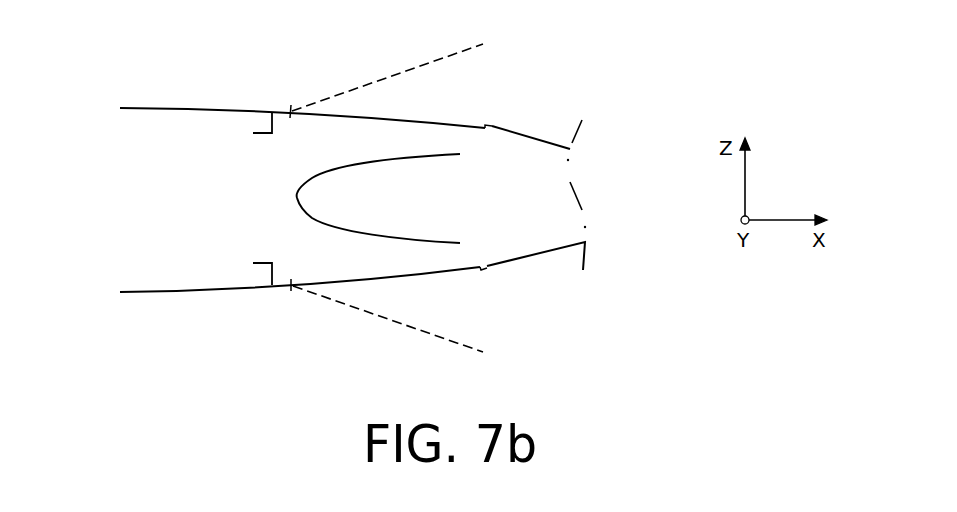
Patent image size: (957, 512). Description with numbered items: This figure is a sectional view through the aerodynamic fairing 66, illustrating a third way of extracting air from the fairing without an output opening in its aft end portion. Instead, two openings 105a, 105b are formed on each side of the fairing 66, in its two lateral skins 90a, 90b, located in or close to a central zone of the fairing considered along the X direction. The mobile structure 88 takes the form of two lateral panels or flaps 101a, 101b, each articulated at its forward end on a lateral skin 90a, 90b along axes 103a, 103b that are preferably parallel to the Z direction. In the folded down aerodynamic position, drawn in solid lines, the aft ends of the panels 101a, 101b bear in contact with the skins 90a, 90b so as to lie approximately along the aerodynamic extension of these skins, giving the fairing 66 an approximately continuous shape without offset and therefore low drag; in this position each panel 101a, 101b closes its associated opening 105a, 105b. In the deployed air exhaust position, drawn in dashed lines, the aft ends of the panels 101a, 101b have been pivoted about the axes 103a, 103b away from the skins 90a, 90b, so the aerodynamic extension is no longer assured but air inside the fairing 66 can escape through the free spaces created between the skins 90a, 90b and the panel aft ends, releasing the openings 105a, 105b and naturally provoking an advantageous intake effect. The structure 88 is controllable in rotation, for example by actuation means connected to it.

The aerodynamic fairing 66 is at (571, 182).
The mobile structure 88 is at (328, 67).
The lateral skin 90a is at (528, 138).
The lateral skin 90b is at (568, 247).
The lateral panel 101a is at (405, 118).
The lateral panel 101b is at (450, 272).
The axis 103a is at (287, 110).
The axis 103b is at (291, 285).
The opening 105a is at (367, 126).
The opening 105b is at (358, 273).